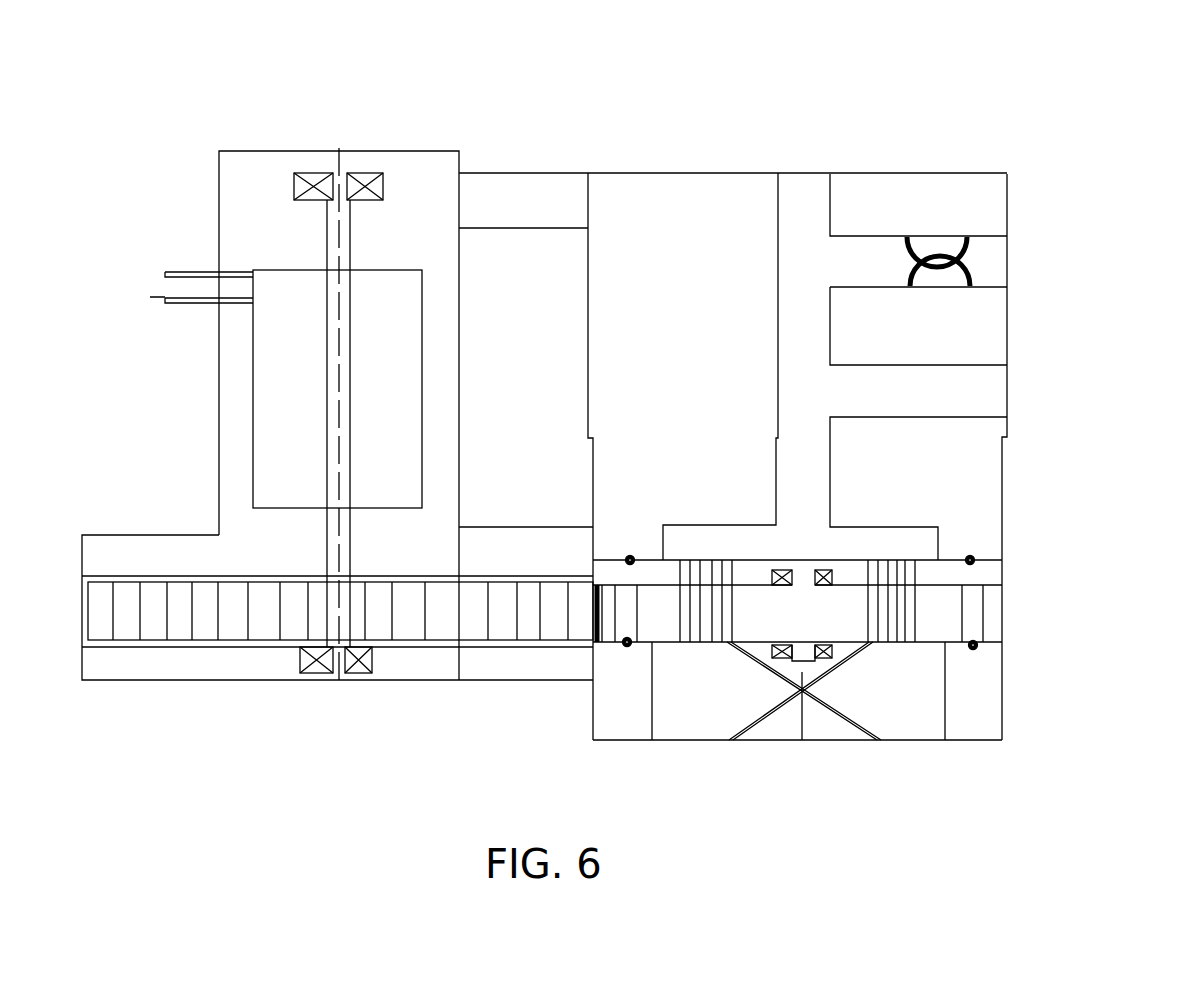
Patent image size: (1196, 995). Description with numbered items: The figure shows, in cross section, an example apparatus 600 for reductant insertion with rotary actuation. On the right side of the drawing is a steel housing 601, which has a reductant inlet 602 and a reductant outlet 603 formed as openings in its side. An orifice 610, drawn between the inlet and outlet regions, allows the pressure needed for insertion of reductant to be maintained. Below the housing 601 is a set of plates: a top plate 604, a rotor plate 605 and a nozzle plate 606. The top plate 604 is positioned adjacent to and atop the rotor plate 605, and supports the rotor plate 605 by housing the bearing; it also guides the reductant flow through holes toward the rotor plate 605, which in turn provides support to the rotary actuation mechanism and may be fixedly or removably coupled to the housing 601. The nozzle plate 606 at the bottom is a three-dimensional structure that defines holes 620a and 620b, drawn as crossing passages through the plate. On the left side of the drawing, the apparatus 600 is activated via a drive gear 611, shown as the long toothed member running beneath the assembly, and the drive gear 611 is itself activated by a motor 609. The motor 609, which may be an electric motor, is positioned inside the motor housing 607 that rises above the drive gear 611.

The apparatus 600 is at (1070, 78).
The housing 601 is at (995, 189).
The reductant inlet 602 is at (995, 262).
The reductant outlet 603 is at (995, 387).
The top plate 604 is at (980, 573).
The rotor plate 605 is at (990, 620).
The nozzle plate 606 is at (920, 697).
The motor housing 607 is at (232, 198).
The motor 609 is at (268, 380).
The orifice 610 is at (942, 236).
The drive gear 611 is at (100, 623).
The hole 620a is at (794, 717).
The hole 620b is at (876, 740).